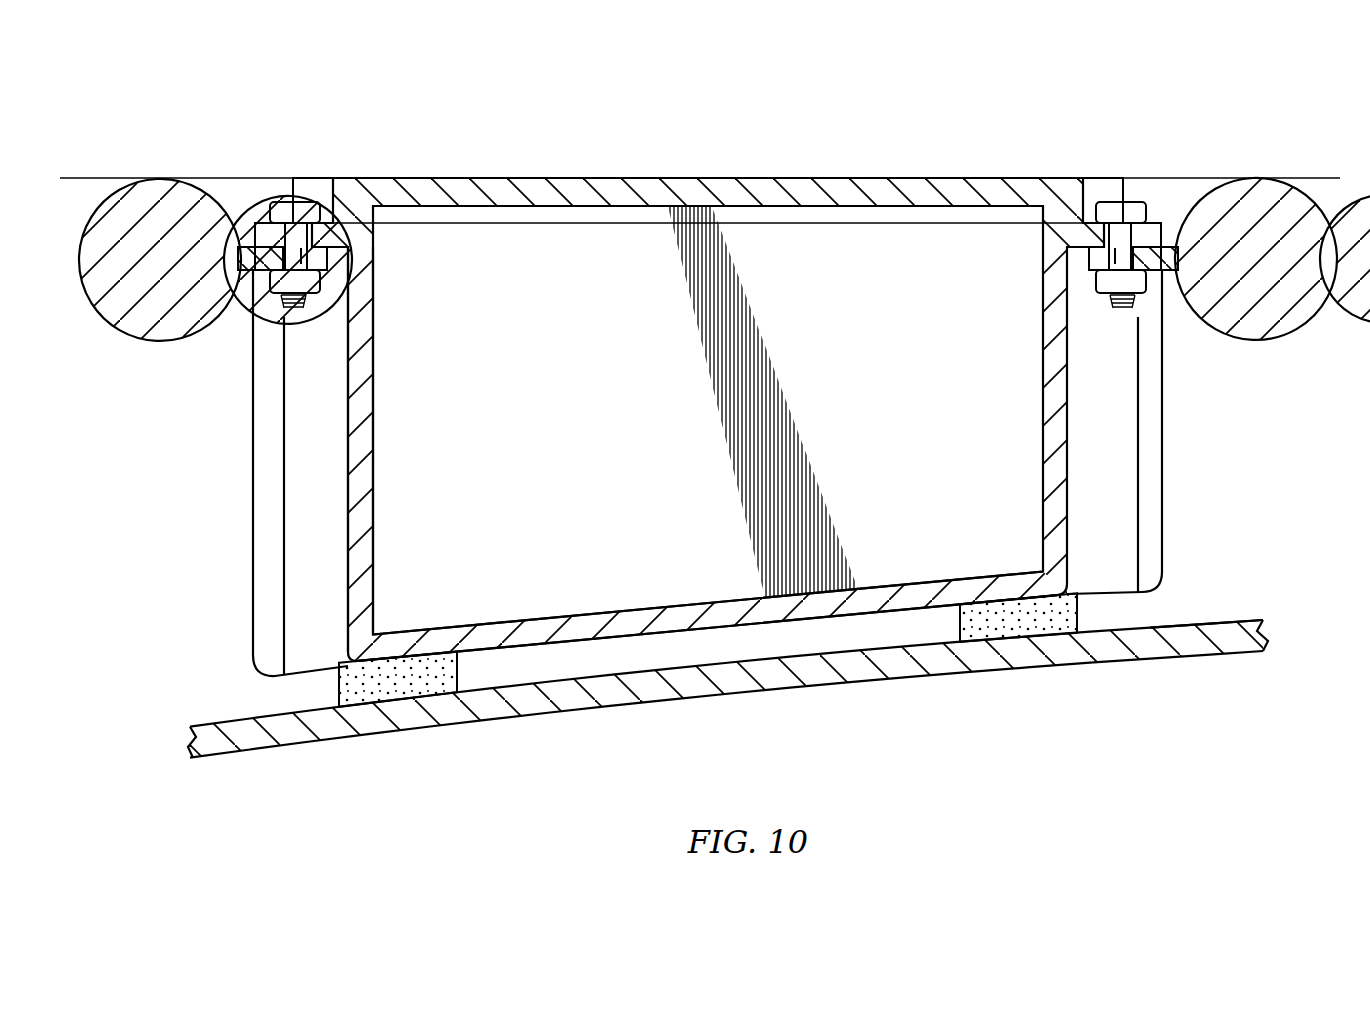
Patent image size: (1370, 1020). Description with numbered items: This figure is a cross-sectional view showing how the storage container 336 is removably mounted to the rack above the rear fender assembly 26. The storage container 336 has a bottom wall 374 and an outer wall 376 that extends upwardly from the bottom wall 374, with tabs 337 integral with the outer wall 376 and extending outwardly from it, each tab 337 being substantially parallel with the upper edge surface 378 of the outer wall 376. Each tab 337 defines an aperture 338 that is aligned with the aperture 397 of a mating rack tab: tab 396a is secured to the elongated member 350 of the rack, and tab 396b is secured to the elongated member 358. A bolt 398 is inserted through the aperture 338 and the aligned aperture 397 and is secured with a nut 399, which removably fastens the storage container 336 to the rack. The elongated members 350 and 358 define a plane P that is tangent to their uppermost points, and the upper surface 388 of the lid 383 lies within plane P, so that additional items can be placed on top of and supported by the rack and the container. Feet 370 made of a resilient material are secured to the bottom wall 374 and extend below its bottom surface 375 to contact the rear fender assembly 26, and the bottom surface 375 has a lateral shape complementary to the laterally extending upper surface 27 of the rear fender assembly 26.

The plane P is at (110, 178).
The rear fender assembly 26 is at (512, 726).
The upper surface 27 is at (1222, 622).
The storage container 336 is at (1168, 488).
The tabs 337 is at (250, 230).
The aperture 338 is at (308, 202).
The elongated member 350 is at (160, 343).
The elongated member 358 is at (1283, 340).
The feet 370 is at (339, 686).
The bottom wall 374 is at (644, 606).
The bottom surface 375 is at (852, 618).
The outer wall 376 is at (373, 510).
The upper edge surface 378 is at (362, 192).
The lid 383 is at (834, 175).
The upper surface 388 is at (607, 177).
The tab 396a is at (330, 253).
The tab 396b is at (1090, 262).
The aperture 397 is at (292, 272).
The bolt 398 is at (270, 210).
The nut 399 is at (327, 288).